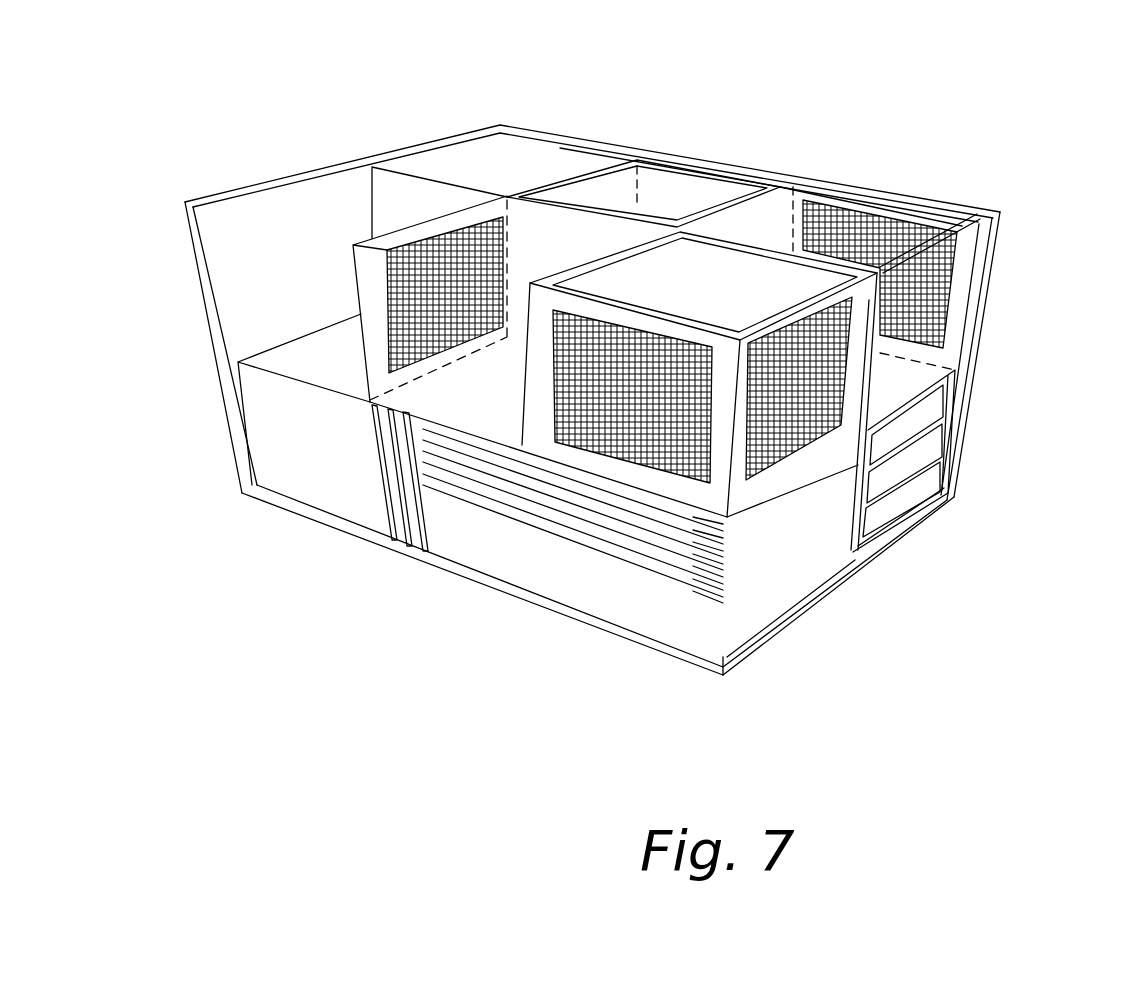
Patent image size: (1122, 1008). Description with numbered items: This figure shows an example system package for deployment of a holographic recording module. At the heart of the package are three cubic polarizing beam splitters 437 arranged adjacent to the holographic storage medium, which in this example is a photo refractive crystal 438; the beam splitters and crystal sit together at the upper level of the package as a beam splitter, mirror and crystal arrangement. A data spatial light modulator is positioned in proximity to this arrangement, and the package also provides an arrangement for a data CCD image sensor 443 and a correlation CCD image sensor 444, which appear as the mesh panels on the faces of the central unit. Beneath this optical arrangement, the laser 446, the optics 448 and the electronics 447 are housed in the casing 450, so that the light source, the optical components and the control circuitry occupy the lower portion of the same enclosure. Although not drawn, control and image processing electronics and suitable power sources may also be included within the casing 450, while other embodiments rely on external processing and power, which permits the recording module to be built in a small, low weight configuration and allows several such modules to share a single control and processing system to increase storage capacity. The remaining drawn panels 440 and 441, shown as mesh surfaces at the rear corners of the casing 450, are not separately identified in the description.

The cubic polarizing beam splitters 437 is at (747, 220).
The photo refractive crystal 438 is at (792, 268).
The right mesh panel 440 is at (945, 277).
The left mesh panel 441 is at (393, 307).
The data CCD image sensor 443 is at (652, 445).
The correlation CCD image sensor 444 is at (800, 400).
The laser 446 is at (777, 570).
The electronics 447 is at (982, 382).
The optics 448 is at (377, 560).
The casing 450 is at (253, 190).